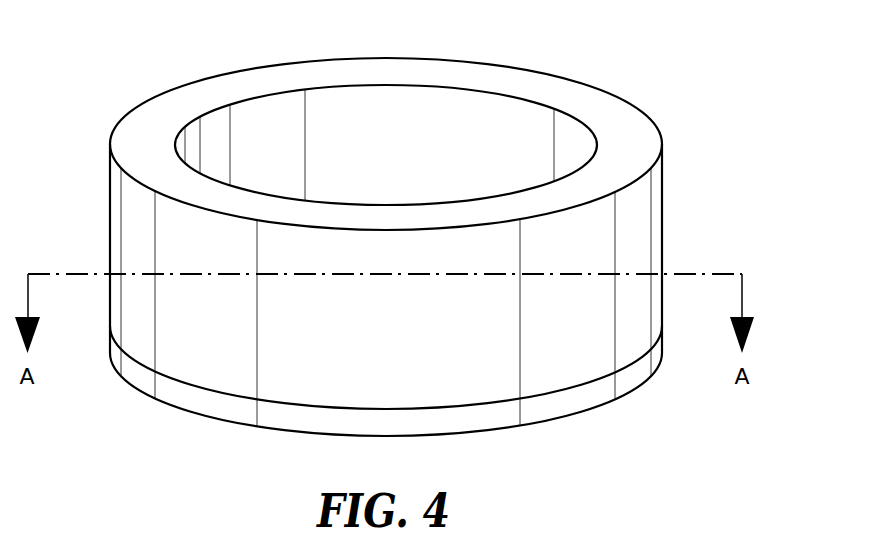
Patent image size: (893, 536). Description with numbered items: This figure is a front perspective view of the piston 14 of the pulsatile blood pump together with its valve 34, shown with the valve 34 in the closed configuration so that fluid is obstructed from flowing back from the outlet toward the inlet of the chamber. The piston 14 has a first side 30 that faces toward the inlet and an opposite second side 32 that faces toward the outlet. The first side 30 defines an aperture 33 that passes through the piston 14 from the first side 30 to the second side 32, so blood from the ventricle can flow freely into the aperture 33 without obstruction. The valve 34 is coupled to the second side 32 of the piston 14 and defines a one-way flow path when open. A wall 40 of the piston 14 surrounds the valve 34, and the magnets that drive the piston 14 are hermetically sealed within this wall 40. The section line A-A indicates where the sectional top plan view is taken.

The piston 14 is at (427, 244).
The first side 30 is at (367, 119).
The aperture 33 is at (477, 127).
The wall 40 is at (663, 233).
The second side 32 is at (177, 382).
The valve 34 is at (602, 416).